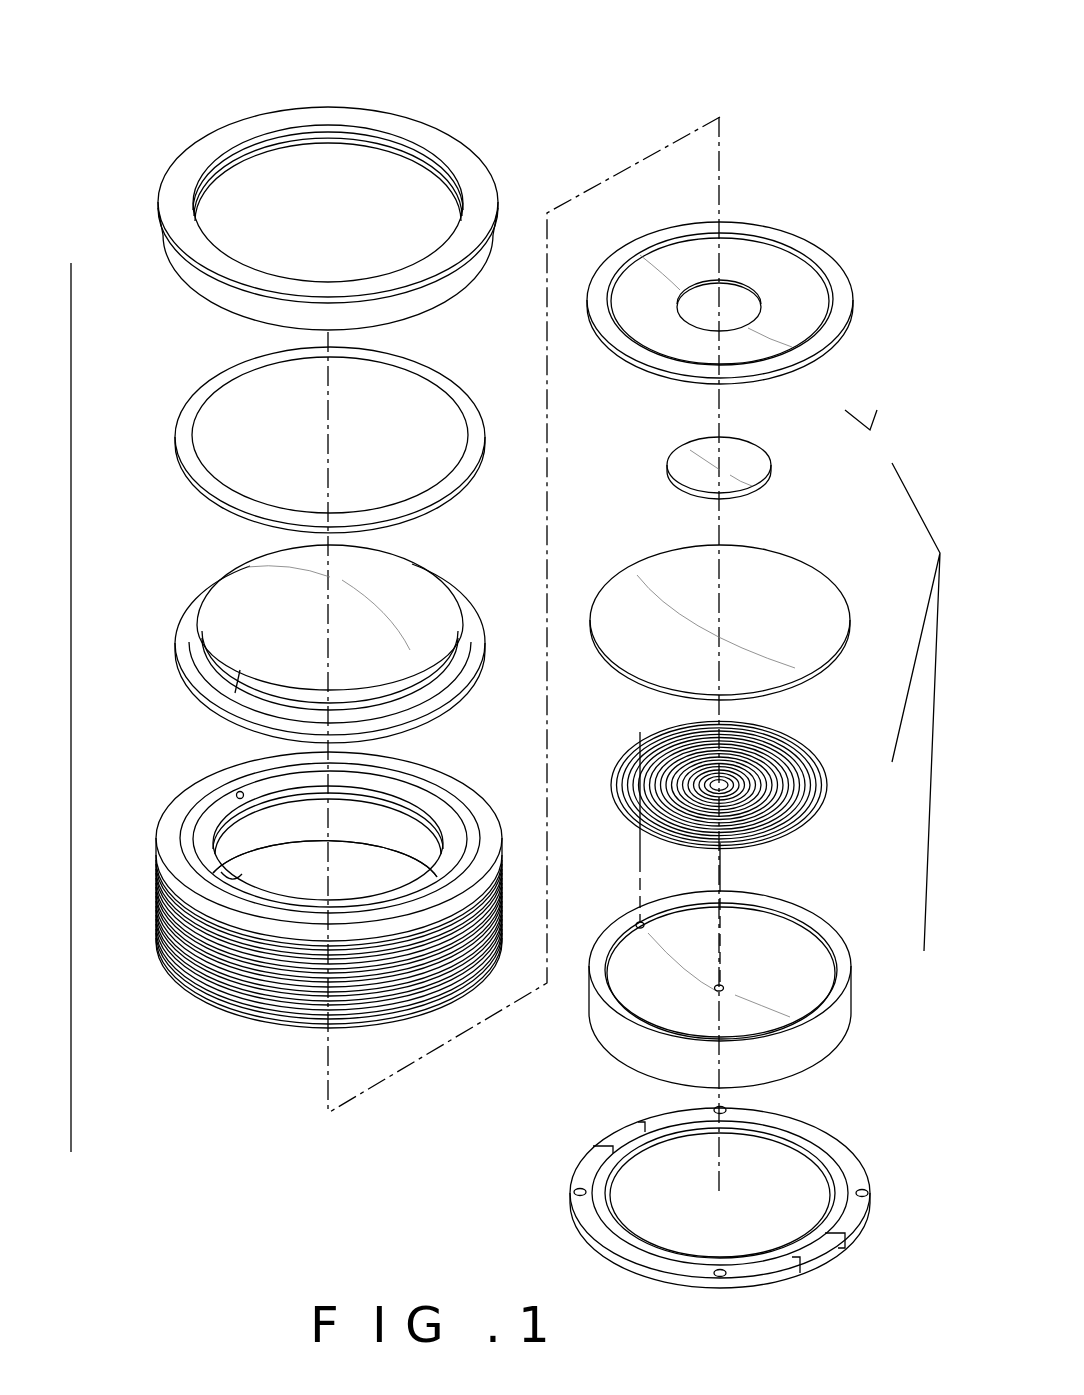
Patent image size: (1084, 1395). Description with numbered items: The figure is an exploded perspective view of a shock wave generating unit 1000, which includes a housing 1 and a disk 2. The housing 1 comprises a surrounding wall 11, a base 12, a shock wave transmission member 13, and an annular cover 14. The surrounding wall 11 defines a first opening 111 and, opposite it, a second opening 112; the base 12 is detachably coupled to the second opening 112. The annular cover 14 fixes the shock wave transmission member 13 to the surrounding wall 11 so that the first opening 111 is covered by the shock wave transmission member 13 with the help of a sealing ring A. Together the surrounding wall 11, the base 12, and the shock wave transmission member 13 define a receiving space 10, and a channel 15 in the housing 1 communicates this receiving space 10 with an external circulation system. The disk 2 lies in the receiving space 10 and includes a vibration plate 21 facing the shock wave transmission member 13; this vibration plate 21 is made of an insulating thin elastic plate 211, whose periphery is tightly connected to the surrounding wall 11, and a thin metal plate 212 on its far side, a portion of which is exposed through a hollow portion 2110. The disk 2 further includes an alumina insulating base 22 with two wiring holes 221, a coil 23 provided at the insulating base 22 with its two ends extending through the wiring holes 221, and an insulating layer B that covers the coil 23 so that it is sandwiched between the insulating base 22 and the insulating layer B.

The shock wave generating unit 1000 is at (660, 100).
The housing 1 is at (71, 413).
The receiving space 10 is at (385, 820).
The surrounding wall 11 is at (197, 983).
The first opening 111 is at (424, 860).
The second opening 112 is at (435, 868).
The base 12 is at (573, 1193).
The shock wave transmission member 13 is at (178, 639).
The annular cover 14 is at (164, 244).
The channel 15 is at (240, 791).
The sealing ring A is at (187, 455).
The disk 2 is at (927, 707).
The vibration plate 21 is at (869, 439).
The insulating thin elastic plate 211 is at (843, 340).
The hollow portion 2110 is at (738, 287).
The thin metal plate 212 is at (753, 460).
The insulating base 22 is at (847, 998).
The wiring holes 221 is at (720, 985).
The coil 23 is at (826, 784).
The insulating layer B is at (838, 590).